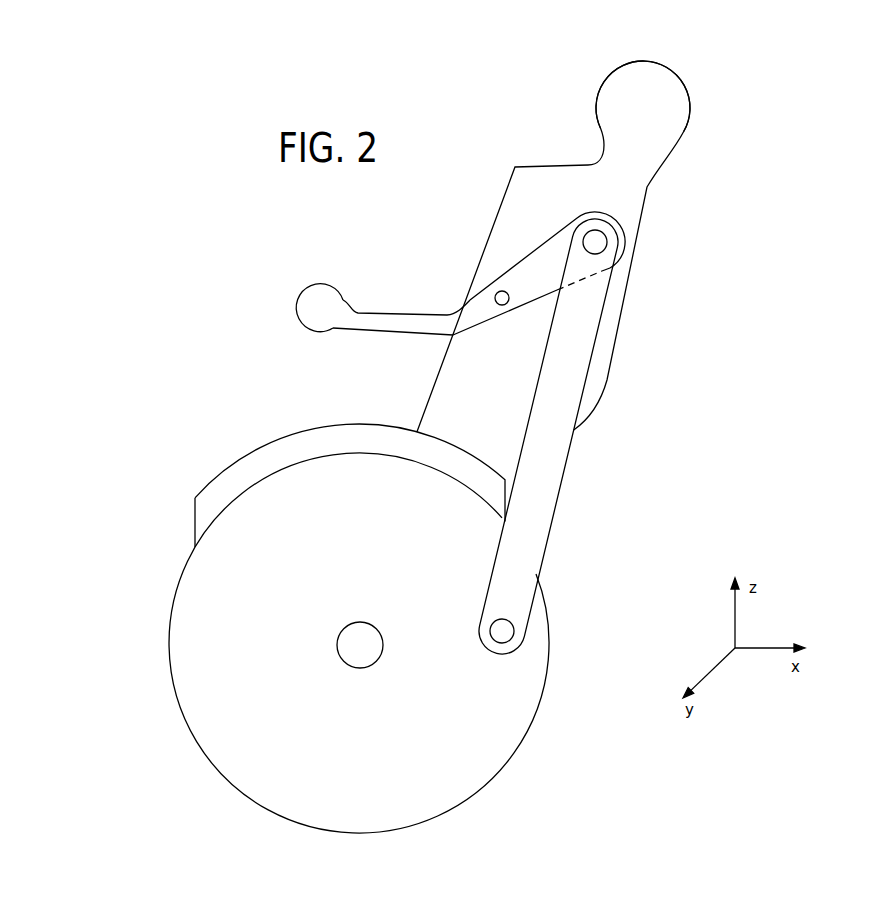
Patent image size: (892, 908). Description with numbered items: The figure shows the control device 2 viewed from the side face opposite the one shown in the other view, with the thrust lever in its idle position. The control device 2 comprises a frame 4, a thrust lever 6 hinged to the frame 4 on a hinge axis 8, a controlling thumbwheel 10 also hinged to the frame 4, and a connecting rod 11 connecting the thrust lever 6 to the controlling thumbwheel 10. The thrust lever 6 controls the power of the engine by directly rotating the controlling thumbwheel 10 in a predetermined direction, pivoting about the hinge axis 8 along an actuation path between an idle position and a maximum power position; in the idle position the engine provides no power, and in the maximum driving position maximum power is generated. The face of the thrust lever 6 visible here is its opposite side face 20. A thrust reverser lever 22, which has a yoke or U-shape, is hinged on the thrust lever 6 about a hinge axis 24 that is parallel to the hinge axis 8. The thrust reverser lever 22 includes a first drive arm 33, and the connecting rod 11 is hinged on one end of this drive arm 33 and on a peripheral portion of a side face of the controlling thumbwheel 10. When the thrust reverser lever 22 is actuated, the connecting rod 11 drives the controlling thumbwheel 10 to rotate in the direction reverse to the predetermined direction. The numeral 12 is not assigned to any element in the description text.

The control device 2 is at (108, 724).
The frame 4 is at (202, 513).
The thrust lever 6 is at (651, 221).
The hinge axis 8 is at (367, 662).
The controlling thumbwheel 10 is at (541, 686).
The connecting rod 11 is at (556, 498).
The wheel cover 12 is at (217, 459).
The opposite side face 20 is at (666, 82).
The thrust reverser lever 22 is at (385, 301).
The hinge axis 24 is at (485, 286).
The first drive arm 33 is at (542, 258).